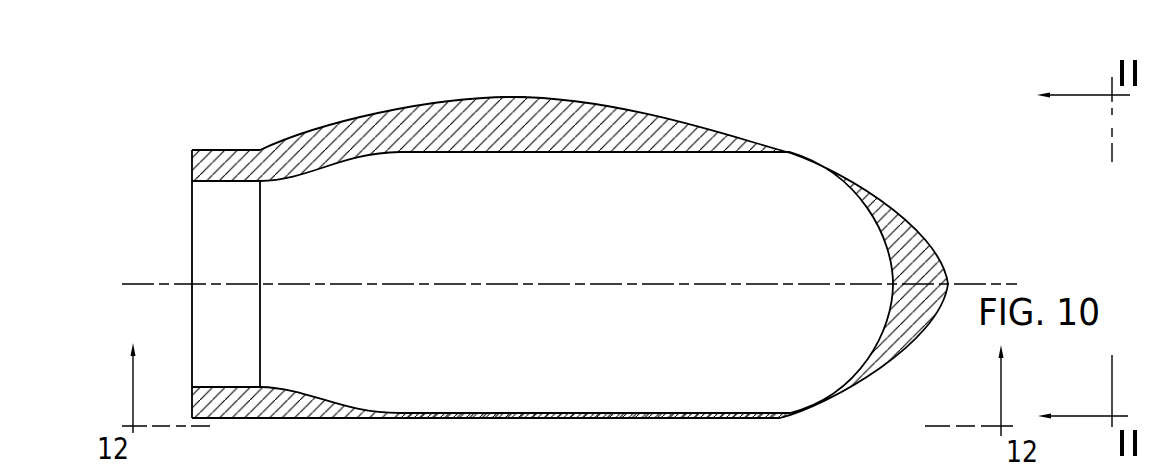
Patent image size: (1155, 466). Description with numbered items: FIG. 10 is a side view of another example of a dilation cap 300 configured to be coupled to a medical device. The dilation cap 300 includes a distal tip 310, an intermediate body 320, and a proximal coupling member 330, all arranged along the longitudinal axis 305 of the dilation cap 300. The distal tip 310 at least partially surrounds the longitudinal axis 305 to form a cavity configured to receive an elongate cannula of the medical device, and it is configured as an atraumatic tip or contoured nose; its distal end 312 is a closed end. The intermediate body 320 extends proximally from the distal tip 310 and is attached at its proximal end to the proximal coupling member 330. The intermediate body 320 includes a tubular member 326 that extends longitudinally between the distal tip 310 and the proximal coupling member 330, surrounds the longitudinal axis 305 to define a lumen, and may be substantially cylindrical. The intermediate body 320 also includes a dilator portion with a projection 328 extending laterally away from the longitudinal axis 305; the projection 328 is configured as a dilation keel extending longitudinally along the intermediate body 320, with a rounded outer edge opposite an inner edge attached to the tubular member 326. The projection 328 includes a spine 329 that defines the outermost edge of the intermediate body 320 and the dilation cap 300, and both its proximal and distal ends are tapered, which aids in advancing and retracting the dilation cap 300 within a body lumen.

The dilation cap 300 is at (591, 236).
The longitudinal axis 305 is at (178, 283).
The distal tip 310 is at (918, 199).
The distal end 312 is at (631, 439).
The intermediate body 320 is at (488, 91).
The tubular member 326 is at (634, 423).
The projection 328 is at (379, 104).
The spine 329 is at (531, 96).
The proximal coupling member 330 is at (235, 139).